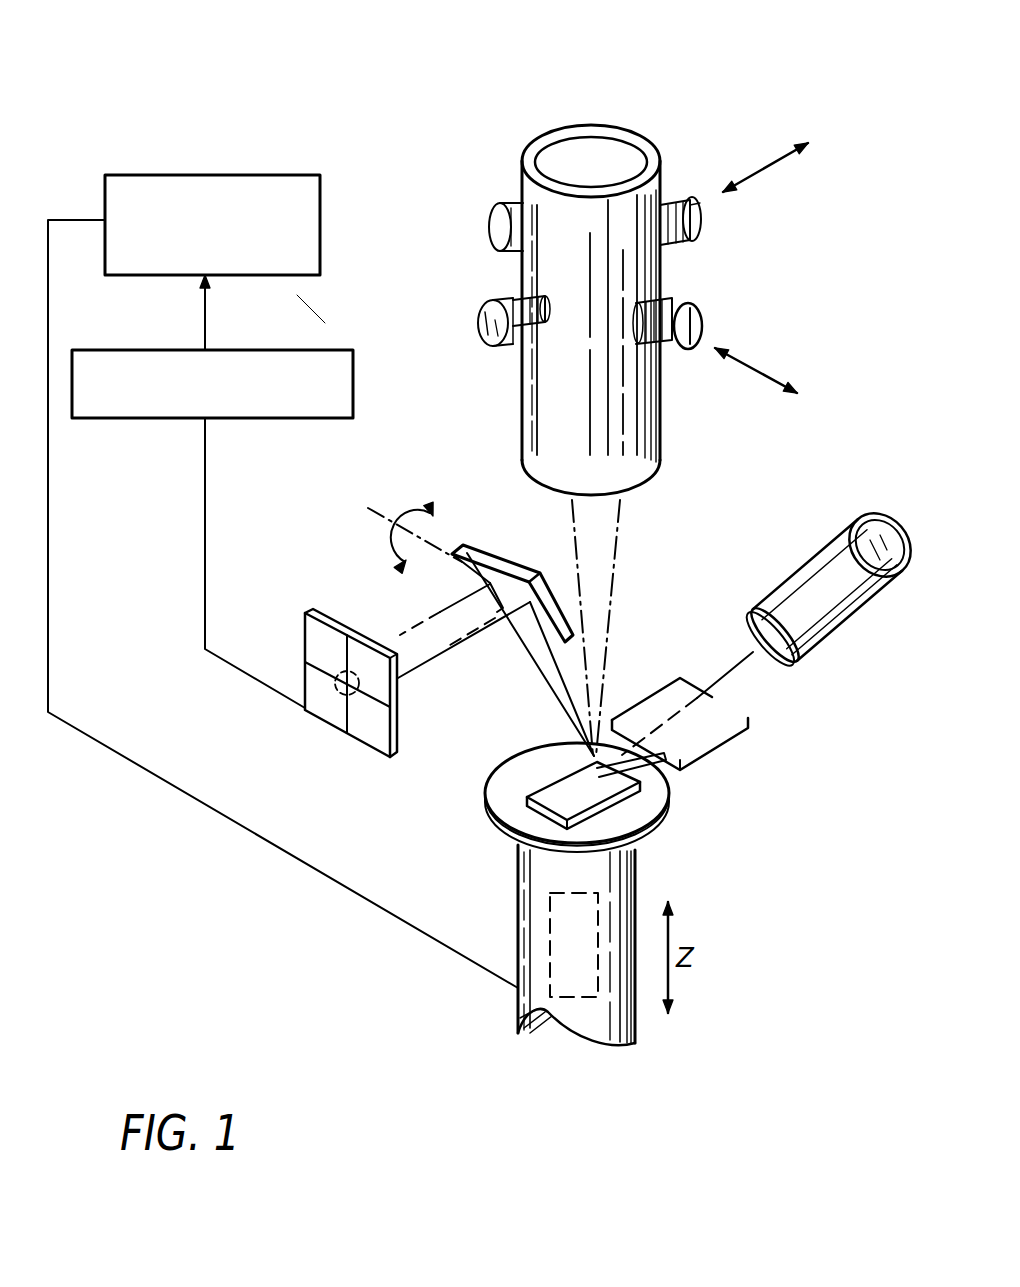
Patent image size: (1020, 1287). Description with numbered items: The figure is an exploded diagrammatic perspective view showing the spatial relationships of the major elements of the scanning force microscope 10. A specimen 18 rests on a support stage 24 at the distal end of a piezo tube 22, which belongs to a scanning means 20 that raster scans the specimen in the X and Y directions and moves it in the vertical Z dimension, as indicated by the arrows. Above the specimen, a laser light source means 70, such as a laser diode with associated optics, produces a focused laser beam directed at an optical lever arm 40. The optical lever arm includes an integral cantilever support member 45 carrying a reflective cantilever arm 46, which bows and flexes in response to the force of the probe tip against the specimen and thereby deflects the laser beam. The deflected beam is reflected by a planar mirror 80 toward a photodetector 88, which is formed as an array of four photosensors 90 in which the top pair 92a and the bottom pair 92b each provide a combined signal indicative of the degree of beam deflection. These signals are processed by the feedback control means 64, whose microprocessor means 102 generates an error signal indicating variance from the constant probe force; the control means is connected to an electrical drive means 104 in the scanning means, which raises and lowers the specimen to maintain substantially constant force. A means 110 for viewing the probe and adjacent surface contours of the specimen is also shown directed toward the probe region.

The scanning force microscope 10 is at (200, 941).
The specimen 18 is at (613, 786).
The scanning means 20 is at (676, 134).
The piezo tube 22 is at (518, 997).
The support stage 24 is at (613, 822).
The optical lever arm 40 is at (718, 766).
The integral cantilever support member 45 is at (658, 698).
The reflective cantilever arm 46 is at (623, 753).
The feedback control means 64 is at (178, 185).
The laser light source means 70 is at (578, 145).
The planar mirror 80 is at (487, 545).
The photodetector 88 is at (300, 632).
The photosensors 90 is at (353, 732).
The top pair 92a is at (312, 655).
The bottom pair 92b is at (330, 707).
The microprocessor means 102 is at (127, 350).
The electrical drive means 104 is at (565, 937).
The means for viewing 110 is at (813, 577).